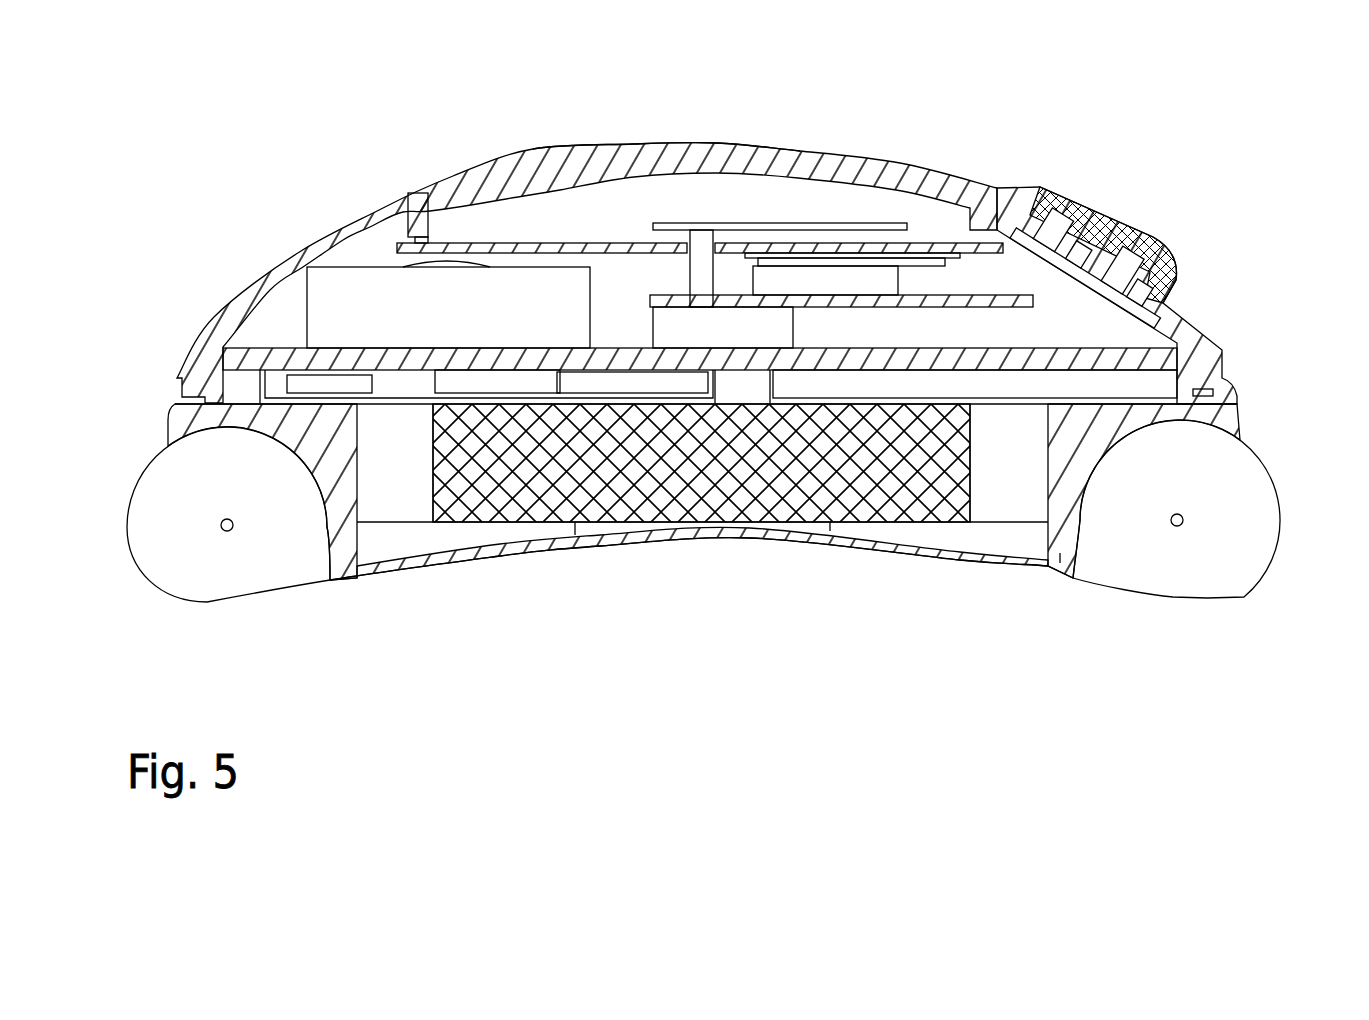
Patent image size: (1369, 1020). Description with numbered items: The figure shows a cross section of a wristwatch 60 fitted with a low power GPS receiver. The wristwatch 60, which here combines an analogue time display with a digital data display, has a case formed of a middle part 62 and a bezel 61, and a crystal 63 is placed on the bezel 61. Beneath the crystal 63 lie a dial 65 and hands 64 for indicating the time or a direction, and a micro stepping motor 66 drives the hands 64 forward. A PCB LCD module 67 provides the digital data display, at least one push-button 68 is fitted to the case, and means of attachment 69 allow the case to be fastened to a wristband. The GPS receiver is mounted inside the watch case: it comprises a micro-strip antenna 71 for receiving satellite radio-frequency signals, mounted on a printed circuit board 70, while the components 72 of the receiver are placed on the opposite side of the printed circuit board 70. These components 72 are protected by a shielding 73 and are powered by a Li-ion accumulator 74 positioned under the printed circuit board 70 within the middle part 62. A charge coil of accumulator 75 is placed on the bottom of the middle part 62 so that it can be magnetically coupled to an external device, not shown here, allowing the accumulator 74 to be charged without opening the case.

The wristwatch 60 is at (1240, 327).
The bezel 61 is at (338, 225).
The middle part 62 is at (1060, 553).
The crystal 63 is at (673, 142).
The hands 64 is at (670, 226).
The dial 65 is at (477, 240).
The micro stepping motor 66 is at (725, 327).
The PCB LCD module 67 is at (820, 293).
The push-button 68 is at (1108, 215).
The means of attachment 69 is at (1173, 553).
The printed circuit board 70 is at (767, 357).
The micro-strip antenna 71 is at (340, 298).
The components 72 is at (312, 380).
The shielding 73 is at (397, 405).
The Li-ion accumulator 74 is at (887, 493).
The charge coil of accumulator 75 is at (497, 530).